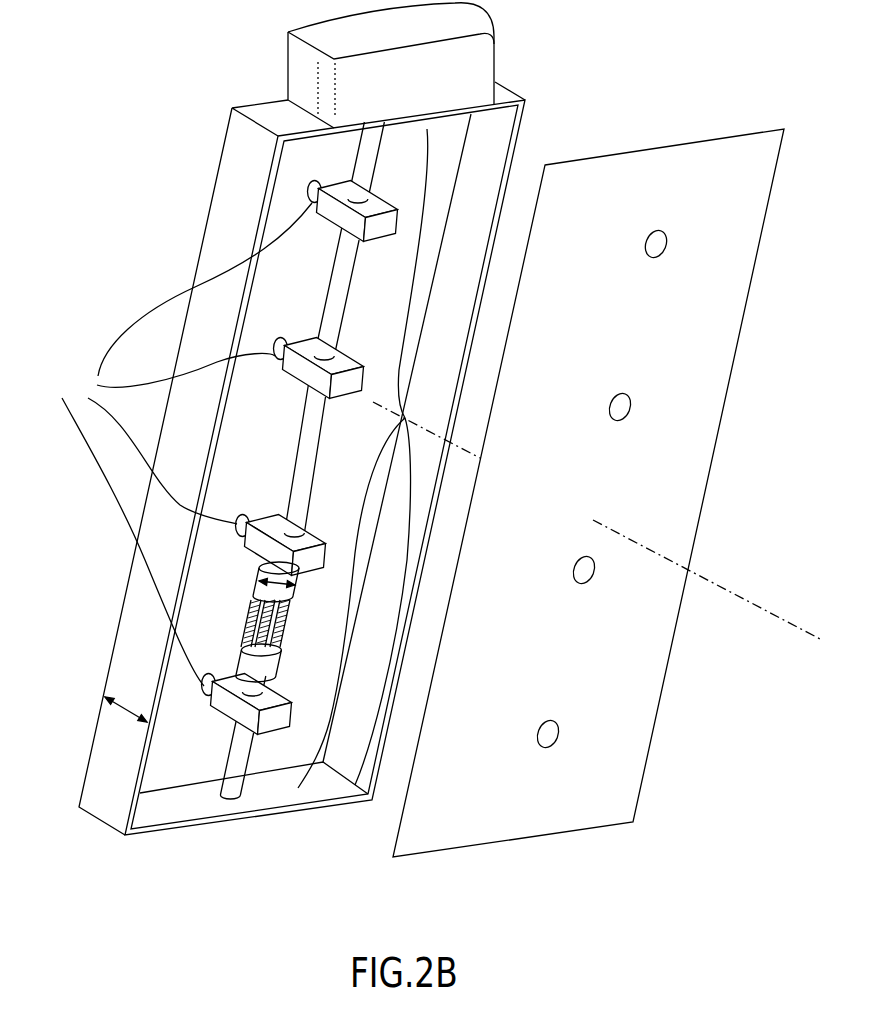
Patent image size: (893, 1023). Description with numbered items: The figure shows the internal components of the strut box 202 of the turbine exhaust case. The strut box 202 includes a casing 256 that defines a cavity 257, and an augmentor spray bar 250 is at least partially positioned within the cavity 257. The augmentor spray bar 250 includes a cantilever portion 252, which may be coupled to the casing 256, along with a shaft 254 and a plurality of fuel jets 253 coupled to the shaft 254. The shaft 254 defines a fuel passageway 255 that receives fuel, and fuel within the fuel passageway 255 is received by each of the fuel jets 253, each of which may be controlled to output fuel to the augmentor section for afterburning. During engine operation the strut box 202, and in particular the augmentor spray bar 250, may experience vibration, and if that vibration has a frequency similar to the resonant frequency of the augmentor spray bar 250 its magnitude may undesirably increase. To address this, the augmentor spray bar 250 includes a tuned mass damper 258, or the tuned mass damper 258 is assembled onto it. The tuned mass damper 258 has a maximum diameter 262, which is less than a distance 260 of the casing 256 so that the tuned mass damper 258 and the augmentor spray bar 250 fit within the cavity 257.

The strut box 202 is at (148, 97).
The augmentor spray bar 250 is at (363, 163).
The cantilever portion 252 is at (355, 785).
The fuel jets 253 is at (185, 444).
The shaft 254 is at (333, 296).
The fuel passageway 255 is at (330, 340).
The casing 256 is at (520, 99).
The cavity 257 is at (484, 150).
The tuned mass damper 258 is at (283, 672).
The distance 260 is at (104, 704).
The maximum diameter 262 is at (257, 587).